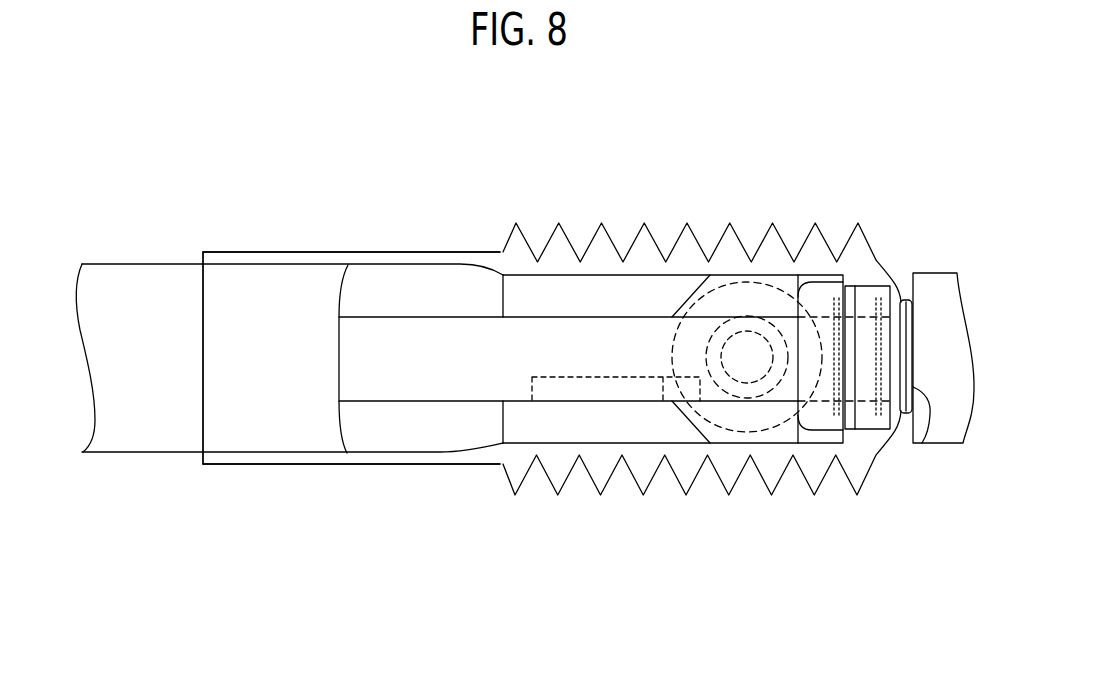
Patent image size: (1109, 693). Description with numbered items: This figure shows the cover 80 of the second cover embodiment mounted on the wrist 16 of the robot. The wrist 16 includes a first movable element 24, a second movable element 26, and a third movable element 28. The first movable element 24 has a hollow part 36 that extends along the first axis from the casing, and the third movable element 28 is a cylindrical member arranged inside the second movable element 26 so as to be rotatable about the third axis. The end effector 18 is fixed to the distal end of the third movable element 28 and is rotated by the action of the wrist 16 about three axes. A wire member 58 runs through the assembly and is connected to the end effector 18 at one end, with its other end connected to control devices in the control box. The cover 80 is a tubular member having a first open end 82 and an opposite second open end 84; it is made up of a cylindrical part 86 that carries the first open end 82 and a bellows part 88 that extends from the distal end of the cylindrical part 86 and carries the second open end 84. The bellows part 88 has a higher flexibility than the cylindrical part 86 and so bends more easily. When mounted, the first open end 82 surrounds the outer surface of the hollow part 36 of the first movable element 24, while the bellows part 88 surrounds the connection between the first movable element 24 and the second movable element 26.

The wrist 16 is at (543, 388).
The end effector 18 is at (935, 458).
The first movable element 24 is at (147, 458).
The second movable element 26 is at (781, 455).
The third movable element 28 is at (905, 432).
The hollow part 36 is at (268, 426).
The wire member 58 is at (420, 377).
The cover 80 is at (473, 240).
The first open end 82 is at (203, 317).
The second open end 84 is at (914, 338).
The cylindrical part 86 is at (375, 252).
The bellows part 88 is at (663, 245).